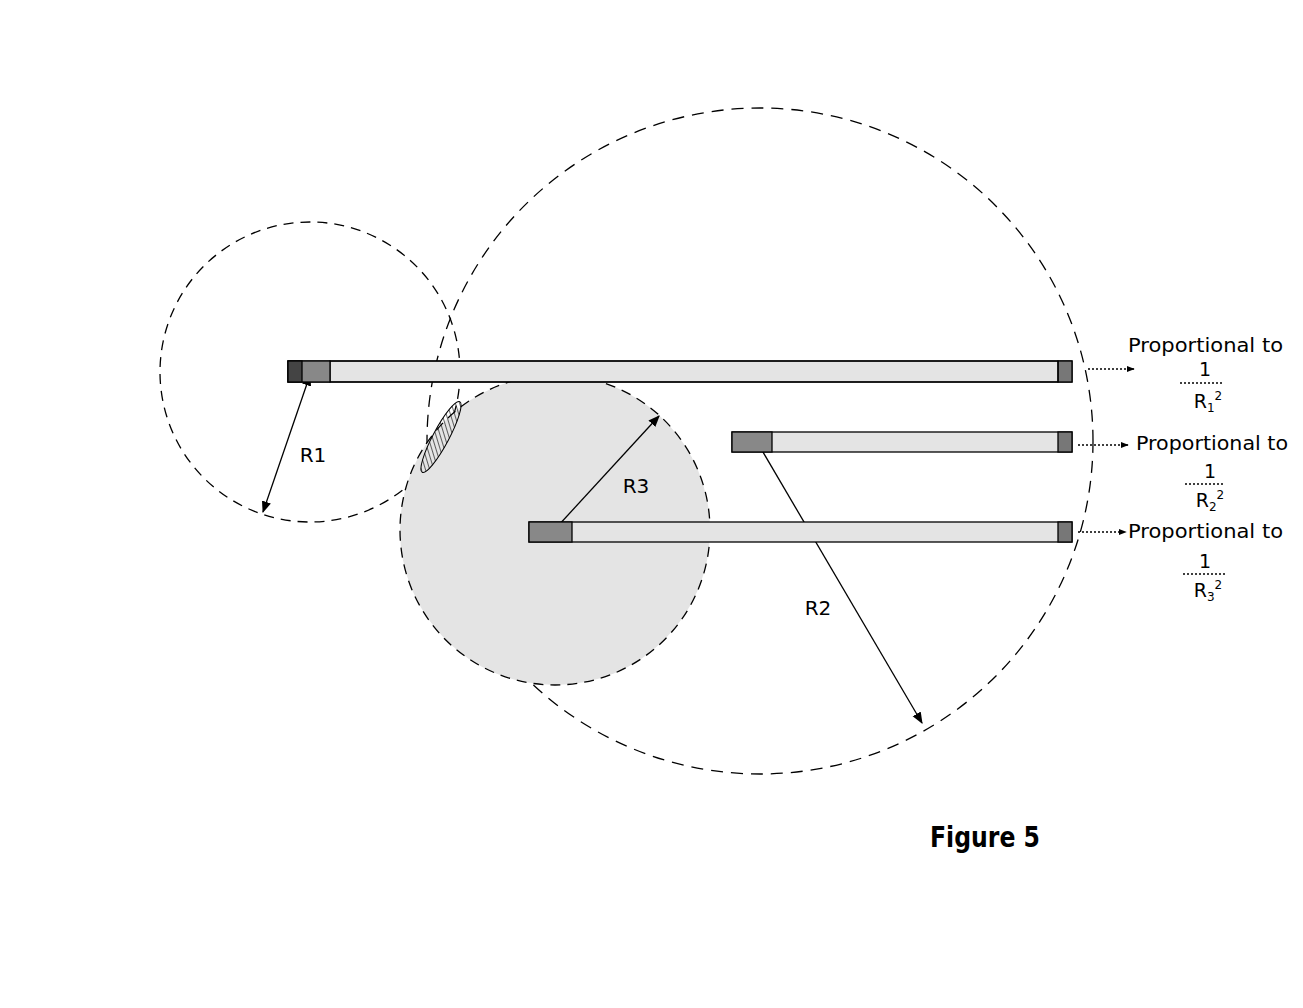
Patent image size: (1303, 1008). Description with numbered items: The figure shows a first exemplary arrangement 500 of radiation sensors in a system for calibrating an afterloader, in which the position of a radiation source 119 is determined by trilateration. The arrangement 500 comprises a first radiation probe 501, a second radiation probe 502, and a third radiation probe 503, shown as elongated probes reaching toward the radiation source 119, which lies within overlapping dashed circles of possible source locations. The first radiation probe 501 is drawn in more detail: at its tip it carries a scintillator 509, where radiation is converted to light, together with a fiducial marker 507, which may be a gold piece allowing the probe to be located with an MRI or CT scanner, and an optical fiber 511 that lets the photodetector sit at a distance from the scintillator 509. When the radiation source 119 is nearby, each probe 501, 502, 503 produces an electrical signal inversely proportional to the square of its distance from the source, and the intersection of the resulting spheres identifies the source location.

The first exemplary arrangement 500 is at (1010, 75).
The fiducial marker 507 is at (290, 367).
The scintillator 509 is at (310, 373).
The optical fiber 511 is at (912, 362).
The radiation source 119 is at (443, 437).
The radiation probe #1 501 is at (680, 393).
The radiation probe #2 502 is at (902, 464).
The radiation probe #2 503 is at (800, 556).